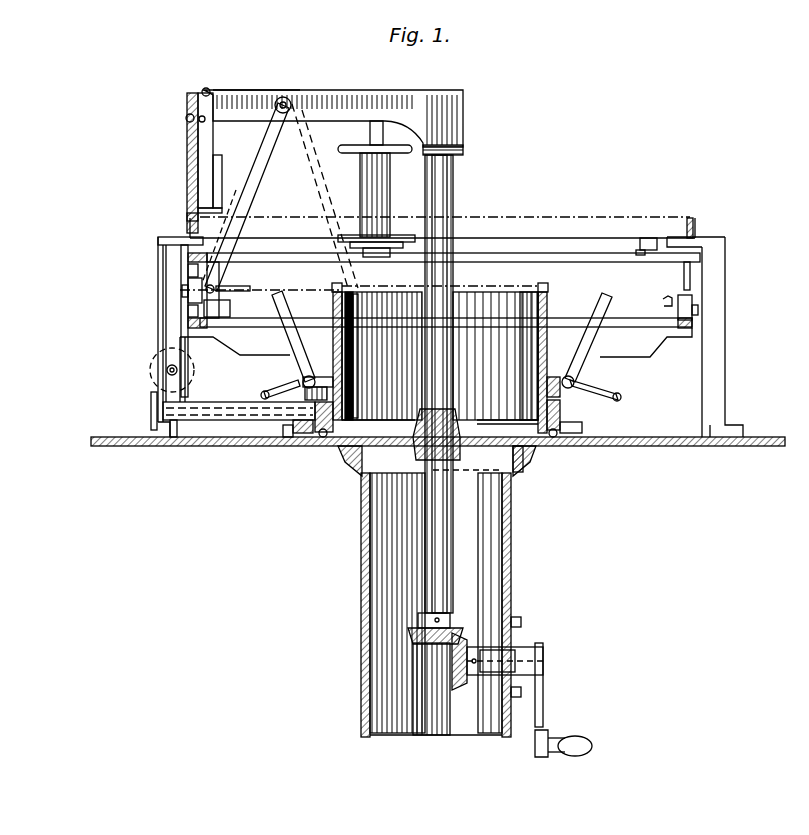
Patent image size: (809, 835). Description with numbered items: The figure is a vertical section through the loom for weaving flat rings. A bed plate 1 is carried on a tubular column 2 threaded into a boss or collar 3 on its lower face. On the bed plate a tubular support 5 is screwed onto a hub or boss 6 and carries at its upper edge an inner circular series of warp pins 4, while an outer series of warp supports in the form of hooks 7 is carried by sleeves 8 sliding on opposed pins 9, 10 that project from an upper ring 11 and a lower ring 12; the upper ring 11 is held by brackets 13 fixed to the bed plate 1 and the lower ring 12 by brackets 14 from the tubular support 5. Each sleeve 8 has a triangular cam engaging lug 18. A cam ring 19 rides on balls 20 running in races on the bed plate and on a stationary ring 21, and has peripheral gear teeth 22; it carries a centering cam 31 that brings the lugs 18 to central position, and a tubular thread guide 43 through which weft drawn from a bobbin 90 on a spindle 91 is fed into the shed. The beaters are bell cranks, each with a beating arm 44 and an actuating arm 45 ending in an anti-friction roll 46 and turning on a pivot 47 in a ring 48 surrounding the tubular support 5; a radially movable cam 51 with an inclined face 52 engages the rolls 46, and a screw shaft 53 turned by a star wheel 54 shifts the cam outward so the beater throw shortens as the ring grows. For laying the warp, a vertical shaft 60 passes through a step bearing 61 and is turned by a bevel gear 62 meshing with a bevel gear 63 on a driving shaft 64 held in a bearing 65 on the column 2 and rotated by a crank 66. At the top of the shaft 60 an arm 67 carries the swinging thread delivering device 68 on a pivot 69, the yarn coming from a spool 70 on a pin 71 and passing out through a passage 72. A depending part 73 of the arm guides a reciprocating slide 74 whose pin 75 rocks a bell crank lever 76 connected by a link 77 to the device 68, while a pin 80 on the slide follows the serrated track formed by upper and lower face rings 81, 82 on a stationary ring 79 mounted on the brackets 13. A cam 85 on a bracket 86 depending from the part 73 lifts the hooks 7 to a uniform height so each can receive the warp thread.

The bed plate 1 is at (760, 446).
The supporting device 2 is at (511, 547).
The boss or collar 3 is at (532, 460).
The warp supports or pins 4 is at (334, 286).
The tubular support 5 is at (538, 348).
The hub or boss 6 is at (534, 422).
The hooks 7 is at (215, 292).
The sleeve 8 is at (188, 290).
The pin 9 is at (188, 271).
The pin 10 is at (188, 311).
The upper ring 11 is at (306, 260).
The lower ring 12 is at (302, 317).
The brackets 13 is at (165, 432).
The brackets 14 is at (240, 349).
The cam engaging lug 18 is at (182, 293).
The cam ring 19 is at (299, 434).
The balls 20 is at (560, 440).
The stationary ring 21 is at (325, 440).
The gear teeth 22 is at (284, 440).
The centering cam 31 is at (181, 252).
The tubular thread guide 43 is at (246, 286).
The beating arm 44 is at (297, 340).
The actuating arm 45 is at (283, 389).
The anti-friction roll 46 is at (262, 399).
The pivot 47 is at (315, 383).
The supporting bracket or ring 48 is at (333, 396).
The cam 51 is at (355, 362).
The inclined face 52 is at (349, 333).
The screw shaft 53 is at (185, 421).
The star wheel 54 is at (150, 412).
The shaft 60 is at (440, 540).
The step bearing 61 is at (423, 416).
The bevel gear 62 is at (415, 632).
The bevel gear 63 is at (455, 660).
The driving shaft 64 is at (545, 659).
The bearing 65 is at (500, 653).
The crank or handle 66 is at (545, 716).
The arm 67 is at (318, 95).
The thread delivering device 68 is at (257, 162).
The pivot 69 is at (287, 97).
The spool 70 is at (361, 175).
The pin 71 is at (370, 132).
The passage 72 is at (235, 198).
The depending part 73 is at (205, 157).
The slide 74 is at (187, 137).
The pin 75 is at (186, 118).
The bell crank lever 76 is at (205, 106).
The link 77 is at (230, 90).
The stationary ring 79 is at (190, 238).
The pin 80 is at (203, 219).
The upper face ring 81 is at (187, 216).
The lower face ring 82 is at (186, 238).
The cam 85 is at (209, 320).
The extension arm or bracket 86 is at (226, 310).
The cop or bobbin 90 is at (150, 370).
The spindle 91 is at (176, 374).